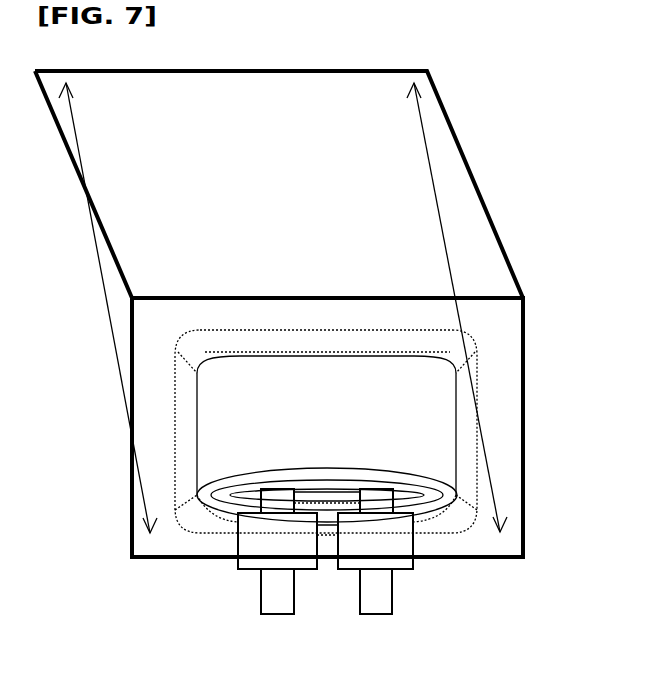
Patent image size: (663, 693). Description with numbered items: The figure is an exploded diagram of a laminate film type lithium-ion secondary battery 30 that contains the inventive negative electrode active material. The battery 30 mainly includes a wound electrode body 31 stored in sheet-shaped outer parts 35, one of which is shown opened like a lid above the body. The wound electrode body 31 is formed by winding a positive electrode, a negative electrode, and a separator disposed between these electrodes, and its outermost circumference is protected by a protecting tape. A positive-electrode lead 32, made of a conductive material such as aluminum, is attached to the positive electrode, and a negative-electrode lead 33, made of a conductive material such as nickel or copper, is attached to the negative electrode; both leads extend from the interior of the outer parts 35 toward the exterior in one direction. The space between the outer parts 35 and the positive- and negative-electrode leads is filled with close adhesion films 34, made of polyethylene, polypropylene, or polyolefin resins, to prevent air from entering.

The laminate film type lithium-ion secondary battery 30 is at (468, 88).
The wound electrode body 31 is at (413, 415).
The positive-electrode lead 32 is at (273, 599).
The negative-electrode lead 33 is at (375, 600).
The close adhesion film 34 is at (397, 547).
The sheet-shaped outer part 35 is at (345, 192).